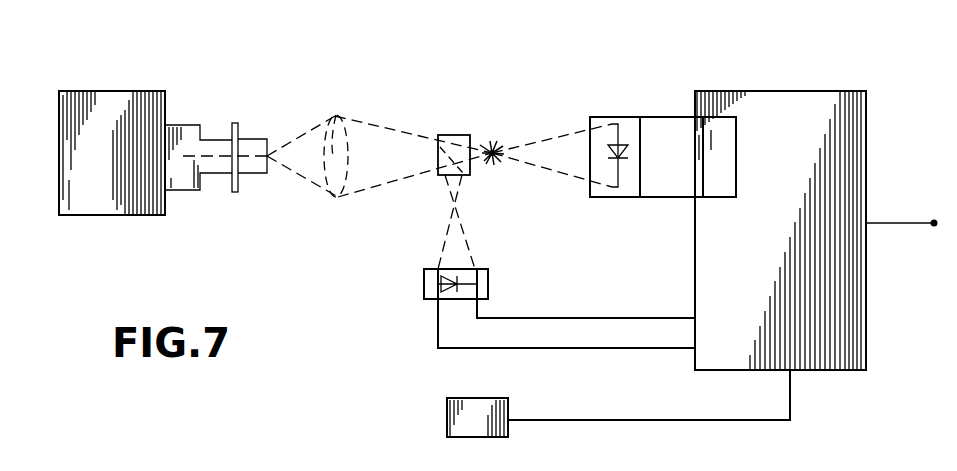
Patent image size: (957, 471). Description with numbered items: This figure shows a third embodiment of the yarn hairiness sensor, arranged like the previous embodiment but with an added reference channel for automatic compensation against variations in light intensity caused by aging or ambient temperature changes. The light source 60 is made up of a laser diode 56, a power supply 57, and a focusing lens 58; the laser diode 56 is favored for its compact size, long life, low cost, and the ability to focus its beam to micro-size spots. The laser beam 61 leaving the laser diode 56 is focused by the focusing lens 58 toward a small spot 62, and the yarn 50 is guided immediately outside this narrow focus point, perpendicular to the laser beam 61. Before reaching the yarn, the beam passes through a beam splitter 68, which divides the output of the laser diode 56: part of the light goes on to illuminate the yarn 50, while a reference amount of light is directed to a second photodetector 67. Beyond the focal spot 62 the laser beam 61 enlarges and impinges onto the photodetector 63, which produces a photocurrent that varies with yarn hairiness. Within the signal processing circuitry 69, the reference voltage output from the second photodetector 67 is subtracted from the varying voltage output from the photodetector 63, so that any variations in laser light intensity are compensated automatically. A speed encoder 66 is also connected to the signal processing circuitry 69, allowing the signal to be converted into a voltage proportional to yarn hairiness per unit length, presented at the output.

The power supply 57 is at (132, 120).
The laser diode 56 is at (258, 147).
The light source 60 is at (257, 186).
The focusing lens 58 is at (335, 116).
The laser beam 61 is at (395, 128).
The beam splitter 68 is at (470, 147).
The yarn 50 is at (493, 141).
The focus spot 62 is at (493, 162).
The photodetector 63 is at (607, 137).
The signal processing circuitry 69 is at (793, 140).
The second photodetector 67 is at (480, 280).
The speed encoder 66 is at (478, 412).